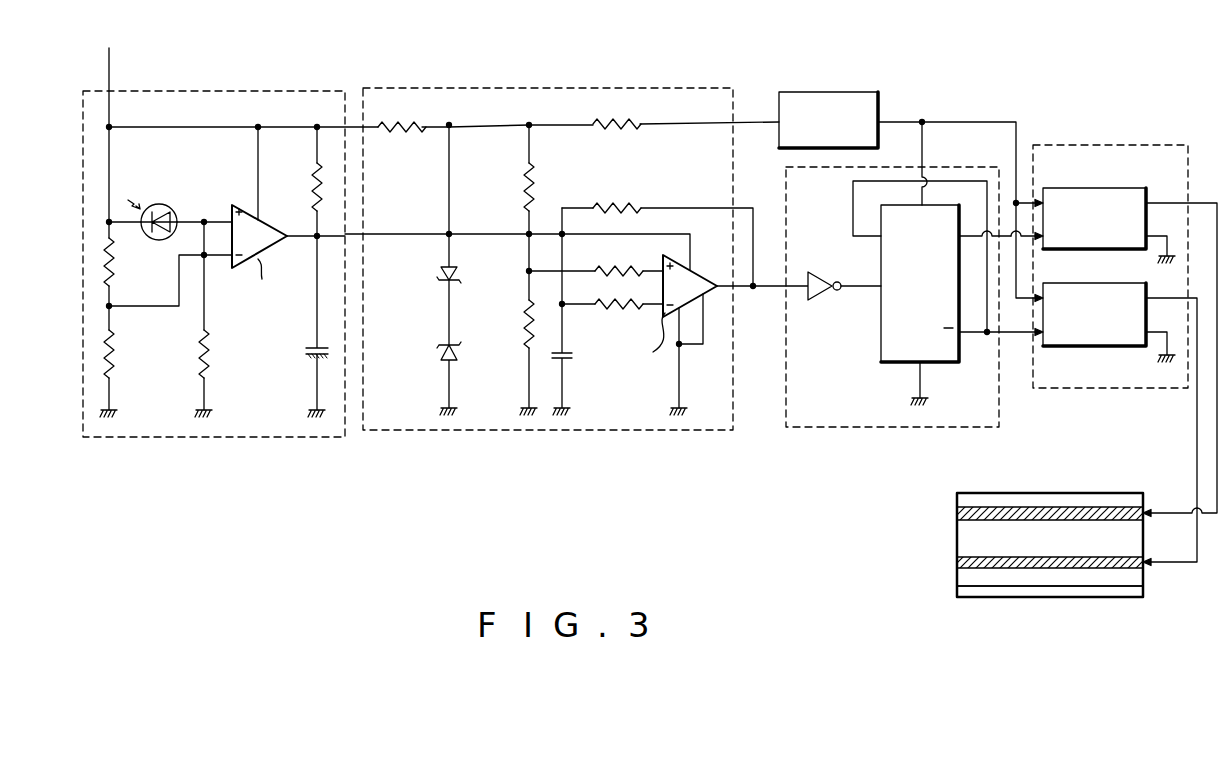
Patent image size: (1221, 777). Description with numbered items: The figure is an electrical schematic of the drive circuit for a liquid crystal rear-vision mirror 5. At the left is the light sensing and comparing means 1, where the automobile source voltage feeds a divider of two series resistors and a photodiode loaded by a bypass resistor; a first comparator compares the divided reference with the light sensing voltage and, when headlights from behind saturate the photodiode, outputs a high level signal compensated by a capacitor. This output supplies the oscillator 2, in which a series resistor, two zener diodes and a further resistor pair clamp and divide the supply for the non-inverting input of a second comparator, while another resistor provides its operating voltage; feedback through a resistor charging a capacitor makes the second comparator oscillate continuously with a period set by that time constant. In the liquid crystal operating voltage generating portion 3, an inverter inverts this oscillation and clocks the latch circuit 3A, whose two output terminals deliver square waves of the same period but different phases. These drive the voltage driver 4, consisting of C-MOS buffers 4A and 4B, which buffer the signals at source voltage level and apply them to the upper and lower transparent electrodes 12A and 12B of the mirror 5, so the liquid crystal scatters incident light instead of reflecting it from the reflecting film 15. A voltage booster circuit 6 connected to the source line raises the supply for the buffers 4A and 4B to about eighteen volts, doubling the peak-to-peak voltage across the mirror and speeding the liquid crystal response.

The light sensing and comparing means 1 is at (221, 91).
The oscillator 2 is at (532, 88).
The liquid crystal operating voltage generating portion 3 is at (838, 427).
The latch circuit 3A is at (881, 346).
The voltage driver 4 is at (1115, 145).
The C-MOS buffer 4A is at (1115, 188).
The C-MOS buffer 4B is at (1075, 346).
The liquid crystal rear-vision mirror 5 is at (1074, 492).
The voltage booster circuit 6 is at (822, 92).
The upper transparent electrode 12A is at (957, 510).
The lower transparent electrode 12B is at (957, 563).
The reflecting film 15 is at (957, 593).